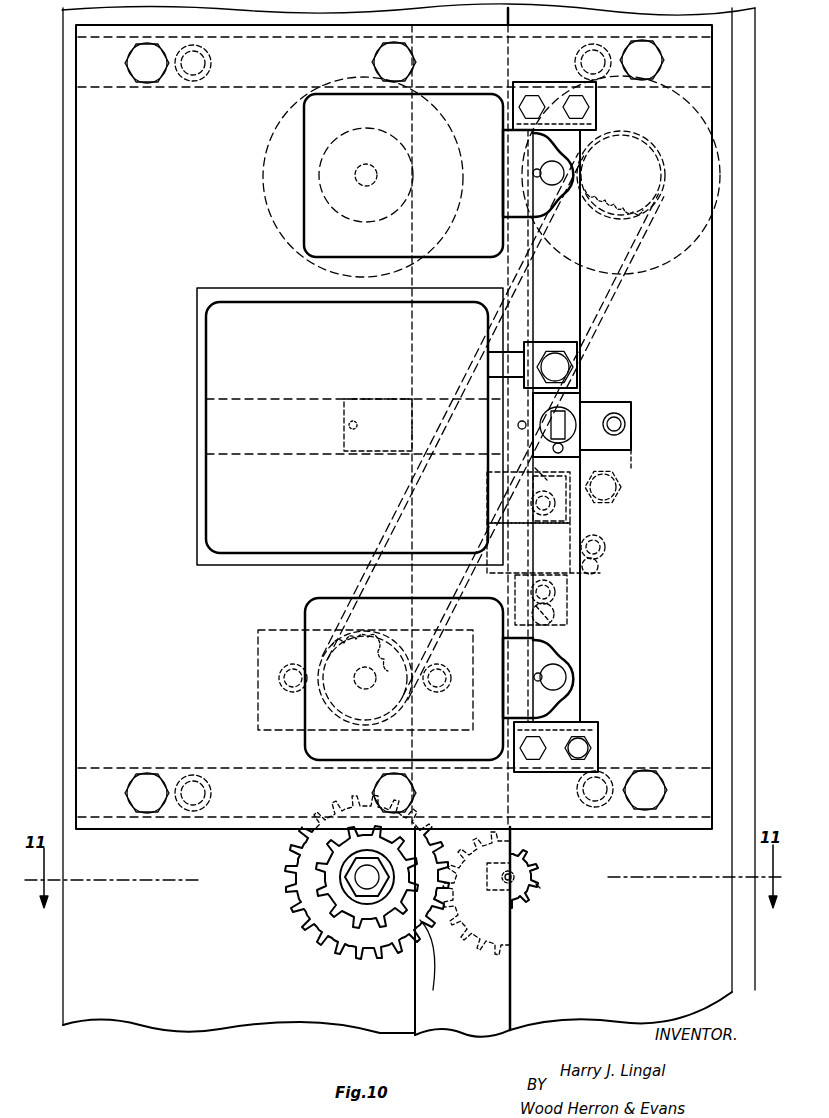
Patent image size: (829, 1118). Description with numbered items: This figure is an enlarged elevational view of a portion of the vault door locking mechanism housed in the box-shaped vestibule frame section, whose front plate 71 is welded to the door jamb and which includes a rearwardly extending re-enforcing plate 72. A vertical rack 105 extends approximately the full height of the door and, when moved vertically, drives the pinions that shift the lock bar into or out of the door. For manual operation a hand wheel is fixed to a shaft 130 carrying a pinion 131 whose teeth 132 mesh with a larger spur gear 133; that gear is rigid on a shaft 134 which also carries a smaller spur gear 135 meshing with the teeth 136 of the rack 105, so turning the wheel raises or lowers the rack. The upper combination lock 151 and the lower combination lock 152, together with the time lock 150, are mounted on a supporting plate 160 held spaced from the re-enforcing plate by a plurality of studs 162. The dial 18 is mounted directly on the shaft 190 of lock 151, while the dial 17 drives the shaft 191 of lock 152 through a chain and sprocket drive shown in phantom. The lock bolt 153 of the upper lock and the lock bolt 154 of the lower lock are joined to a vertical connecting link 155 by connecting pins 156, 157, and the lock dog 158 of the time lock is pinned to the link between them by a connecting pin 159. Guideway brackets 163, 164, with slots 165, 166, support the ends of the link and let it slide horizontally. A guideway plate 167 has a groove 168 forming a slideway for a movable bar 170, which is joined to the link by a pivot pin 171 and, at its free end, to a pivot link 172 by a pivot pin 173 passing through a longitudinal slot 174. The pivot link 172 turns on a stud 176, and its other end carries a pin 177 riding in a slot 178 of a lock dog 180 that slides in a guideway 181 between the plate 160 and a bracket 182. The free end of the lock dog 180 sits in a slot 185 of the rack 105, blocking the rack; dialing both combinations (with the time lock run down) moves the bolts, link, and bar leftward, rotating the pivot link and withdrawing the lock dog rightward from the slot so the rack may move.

The dial 17 is at (688, 278).
The dial 18 is at (262, 177).
The front plate 71 is at (85, 11).
The re-enforcing plate 72 is at (752, 306).
The vertical rack 105 is at (528, 956).
The shaft 130 is at (528, 846).
The pinion 131 is at (540, 870).
The teeth 132 is at (542, 888).
The spur gear 133 is at (462, 932).
The shaft 134 is at (368, 882).
The spur gear 135 is at (340, 900).
The teeth 136 is at (434, 963).
The time lock 150 is at (212, 504).
The combination lock 151 is at (312, 240).
The combination lock 152 is at (308, 610).
The lock bolt 153 is at (506, 224).
The lock bolt 154 is at (516, 718).
The connecting link 155 is at (583, 256).
The connecting pin 156 is at (560, 173).
The connecting pin 157 is at (562, 678).
The lock dog 158 is at (496, 366).
The connecting pin 159 is at (562, 368).
The supporting plate 160 is at (112, 847).
The studs 162 is at (148, 72).
The guideway bracket 163 is at (594, 752).
The guideway bracket 164 is at (596, 100).
The slot 165 is at (598, 725).
The slot 166 is at (598, 128).
The guideway plate 167 is at (202, 572).
The groove 168 is at (318, 456).
The bar 170 is at (598, 410).
The pivot pin 171 is at (566, 418).
The pivot link 172 is at (632, 469).
The pivot pin 173 is at (628, 432).
The longitudinal slot 174 is at (628, 418).
The stud 176 is at (612, 488).
The pin 177 is at (606, 548).
The slot 178 is at (600, 566).
The lock dog 180 is at (608, 578).
The guideway 181 is at (580, 592).
The bracket 182 is at (572, 613).
The slot 185 is at (488, 519).
The shaft 190 is at (366, 186).
The shaft 191 is at (366, 690).